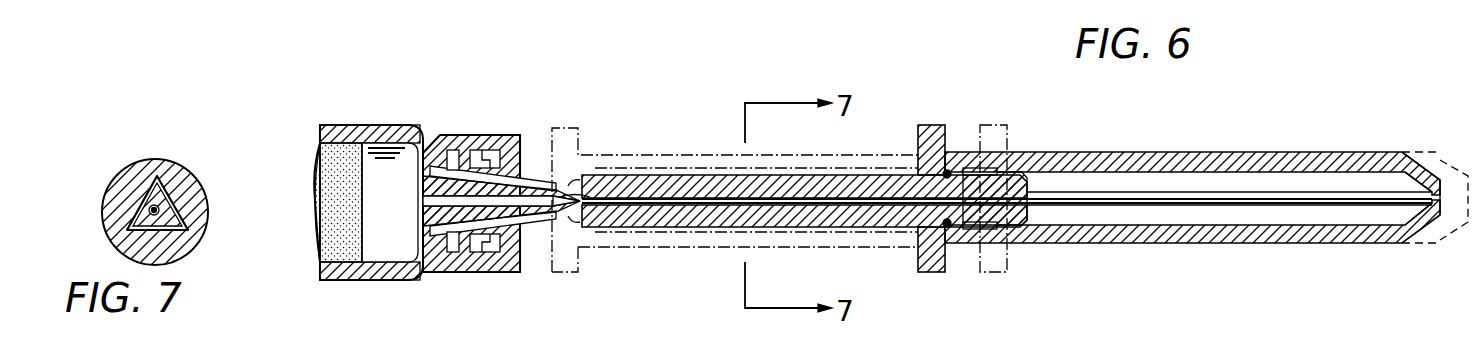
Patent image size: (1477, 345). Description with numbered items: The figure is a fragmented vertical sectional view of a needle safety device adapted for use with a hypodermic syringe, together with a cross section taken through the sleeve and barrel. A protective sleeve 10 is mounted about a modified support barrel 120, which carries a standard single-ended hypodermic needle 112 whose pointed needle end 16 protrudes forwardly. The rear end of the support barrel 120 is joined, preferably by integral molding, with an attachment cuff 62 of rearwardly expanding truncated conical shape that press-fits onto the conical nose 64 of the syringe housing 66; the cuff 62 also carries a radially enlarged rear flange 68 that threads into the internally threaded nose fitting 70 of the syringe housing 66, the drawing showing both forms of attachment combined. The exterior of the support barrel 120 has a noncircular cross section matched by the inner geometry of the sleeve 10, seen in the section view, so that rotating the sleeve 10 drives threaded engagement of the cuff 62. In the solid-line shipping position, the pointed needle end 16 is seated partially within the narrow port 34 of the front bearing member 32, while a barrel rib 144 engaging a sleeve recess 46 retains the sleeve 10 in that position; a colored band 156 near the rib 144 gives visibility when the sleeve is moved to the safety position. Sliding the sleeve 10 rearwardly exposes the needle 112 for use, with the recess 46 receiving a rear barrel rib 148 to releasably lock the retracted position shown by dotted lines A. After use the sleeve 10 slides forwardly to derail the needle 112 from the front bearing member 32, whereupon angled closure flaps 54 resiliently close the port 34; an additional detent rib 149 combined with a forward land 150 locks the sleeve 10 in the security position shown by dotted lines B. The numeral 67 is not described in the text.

In FIG. 7, the protective sleeve 10 is at (195, 172).
In FIG. 6, the protective sleeve 10 is at (1220, 244).
In FIG. 6, the pointed needle end 16 is at (1428, 192).
In FIG. 6, the front bearing member 32 is at (1420, 178).
In FIG. 6, the port 34 is at (1445, 194).
In FIG. 6, the sleeve recess 46 is at (940, 218).
In FIG. 6, the closure flaps 54 is at (1400, 170).
In FIG. 6, the attachment cuff 62 is at (535, 232).
In FIG. 6, the conical nose 64 is at (515, 188).
In FIG. 6, the syringe housing 66 is at (384, 283).
In FIG. 6, the cap face 67 is at (318, 165).
In FIG. 6, the rear flange 68 is at (480, 252).
In FIG. 6, the nose fitting 70 is at (465, 135).
In FIG. 7, the hypodermic needle 112 is at (146, 180).
In FIG. 6, the hypodermic needle 112 is at (1197, 195).
In FIG. 7, the support barrel 120 is at (190, 225).
In FIG. 6, the support barrel 120 is at (838, 182).
In FIG. 6, the barrel rib 144 is at (950, 172).
In FIG. 6, the rear barrel rib 148 is at (586, 176).
In FIG. 6, the additional detent rib 149 is at (1005, 172).
In FIG. 6, the forward land 150 is at (1010, 232).
In FIG. 6, the colored band 156 is at (922, 125).
In FIG. 6, the dotted lines A is at (668, 155).
In FIG. 6, the dotted lines B is at (1448, 155).